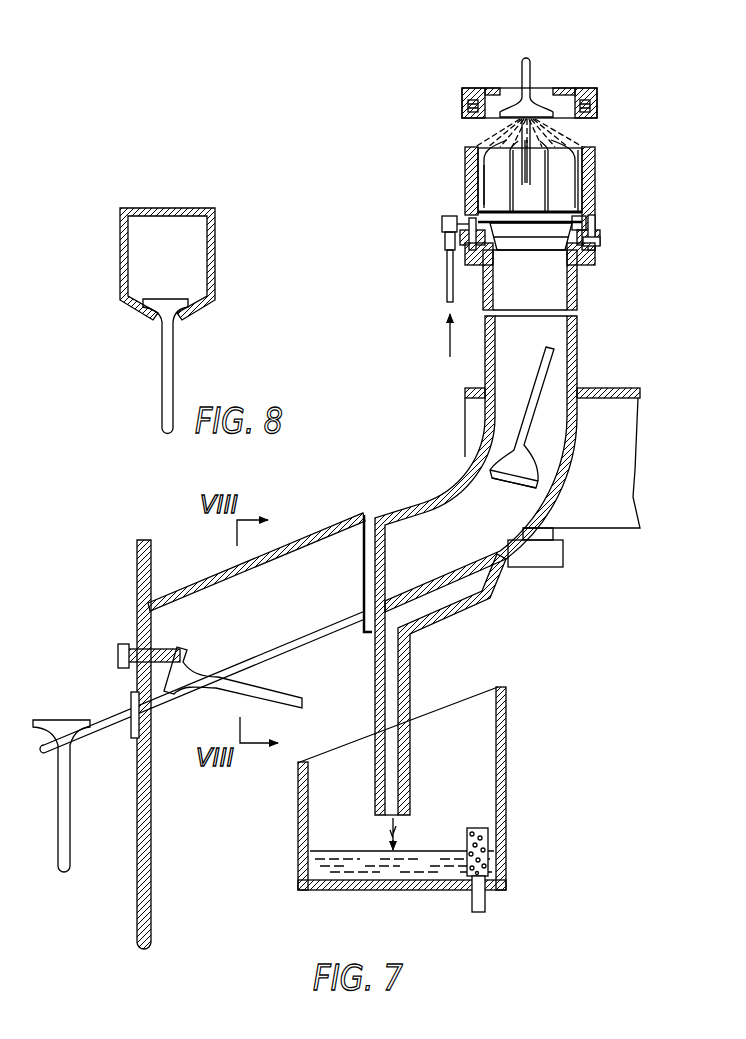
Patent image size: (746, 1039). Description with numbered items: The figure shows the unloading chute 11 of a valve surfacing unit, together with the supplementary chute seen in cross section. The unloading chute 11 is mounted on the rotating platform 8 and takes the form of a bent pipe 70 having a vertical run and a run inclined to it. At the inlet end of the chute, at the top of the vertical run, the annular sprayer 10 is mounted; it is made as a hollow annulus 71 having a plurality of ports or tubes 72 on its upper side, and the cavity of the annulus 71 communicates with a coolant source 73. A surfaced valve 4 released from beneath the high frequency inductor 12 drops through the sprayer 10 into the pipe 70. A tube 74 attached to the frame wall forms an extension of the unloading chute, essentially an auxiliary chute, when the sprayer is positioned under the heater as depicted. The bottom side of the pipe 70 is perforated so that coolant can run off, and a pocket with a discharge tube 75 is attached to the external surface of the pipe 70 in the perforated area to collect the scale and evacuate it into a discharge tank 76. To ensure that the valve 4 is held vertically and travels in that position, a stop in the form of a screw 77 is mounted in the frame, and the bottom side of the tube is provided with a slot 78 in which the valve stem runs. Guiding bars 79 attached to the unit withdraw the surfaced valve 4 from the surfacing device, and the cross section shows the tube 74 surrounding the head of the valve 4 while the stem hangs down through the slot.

In FIG. 7, the valve 4 is at (533, 70).
In FIG. 8, the valve 4 is at (173, 330).
In FIG. 7, the platform 8 is at (600, 390).
In FIG. 7, the sprayer 10 is at (598, 180).
In FIG. 7, the unloading chute 11 is at (574, 439).
In FIG. 7, the high frequency inductor 12 is at (598, 105).
In FIG. 7, the bent pipe 70 is at (577, 338).
In FIG. 7, the hollow annulus 71 is at (598, 225).
In FIG. 7, the ports or tubes 72 is at (479, 170).
In FIG. 7, the coolant source 73 is at (446, 250).
In FIG. 7, the tube 74 is at (212, 577).
In FIG. 8, the tube 74 is at (212, 272).
In FIG. 7, the discharge tube 75 is at (411, 675).
In FIG. 7, the discharge tank 76 is at (505, 740).
In FIG. 7, the screw 77 is at (128, 645).
In FIG. 7, the slot 78 is at (352, 627).
In FIG. 7, the guiding bars 79 is at (118, 715).